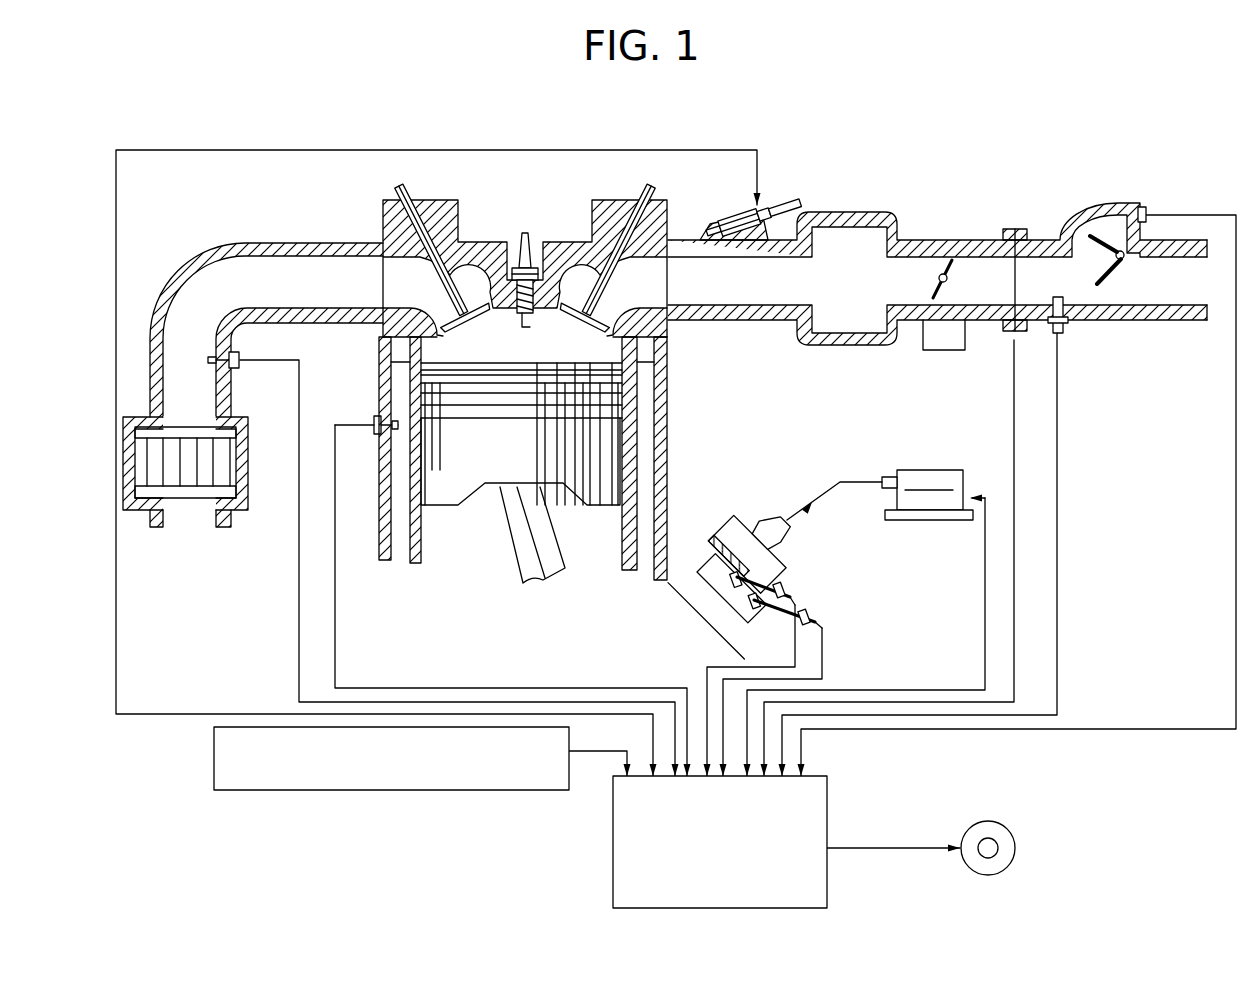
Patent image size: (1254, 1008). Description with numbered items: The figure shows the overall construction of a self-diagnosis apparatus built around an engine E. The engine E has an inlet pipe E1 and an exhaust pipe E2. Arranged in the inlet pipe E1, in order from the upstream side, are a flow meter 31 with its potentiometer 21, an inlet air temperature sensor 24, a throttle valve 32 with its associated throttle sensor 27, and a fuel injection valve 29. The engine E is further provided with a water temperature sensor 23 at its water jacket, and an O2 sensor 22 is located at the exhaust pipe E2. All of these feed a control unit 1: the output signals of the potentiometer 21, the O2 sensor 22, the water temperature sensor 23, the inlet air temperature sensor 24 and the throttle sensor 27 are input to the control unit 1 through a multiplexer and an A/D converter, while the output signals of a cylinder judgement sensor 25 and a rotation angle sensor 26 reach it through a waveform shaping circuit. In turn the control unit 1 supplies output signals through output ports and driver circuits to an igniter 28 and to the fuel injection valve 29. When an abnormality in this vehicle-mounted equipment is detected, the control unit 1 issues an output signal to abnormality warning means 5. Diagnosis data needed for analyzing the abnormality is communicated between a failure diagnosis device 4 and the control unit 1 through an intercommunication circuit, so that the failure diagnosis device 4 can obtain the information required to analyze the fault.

The control unit 1 is at (827, 786).
The failure diagnosis device 4 is at (433, 790).
The abnormality warning means 5 is at (1016, 845).
The potentiometer 21 is at (1142, 207).
The O2 sensor 22 is at (240, 366).
The water temperature sensor 23 is at (350, 418).
The inlet air temperature sensor 24 is at (1064, 330).
The cylinder judgement sensor 25 is at (793, 597).
The rotation angle sensor 26 is at (817, 623).
The intake pressure sensor 27 is at (933, 351).
The igniter 28 is at (945, 470).
The fuel injection valve 29 is at (770, 210).
The flow meter 31 is at (1090, 215).
The throttle valve 32 is at (958, 264).
The engine E is at (455, 210).
The inlet pipe E1 is at (925, 240).
The exhaust pipe E2 is at (245, 243).